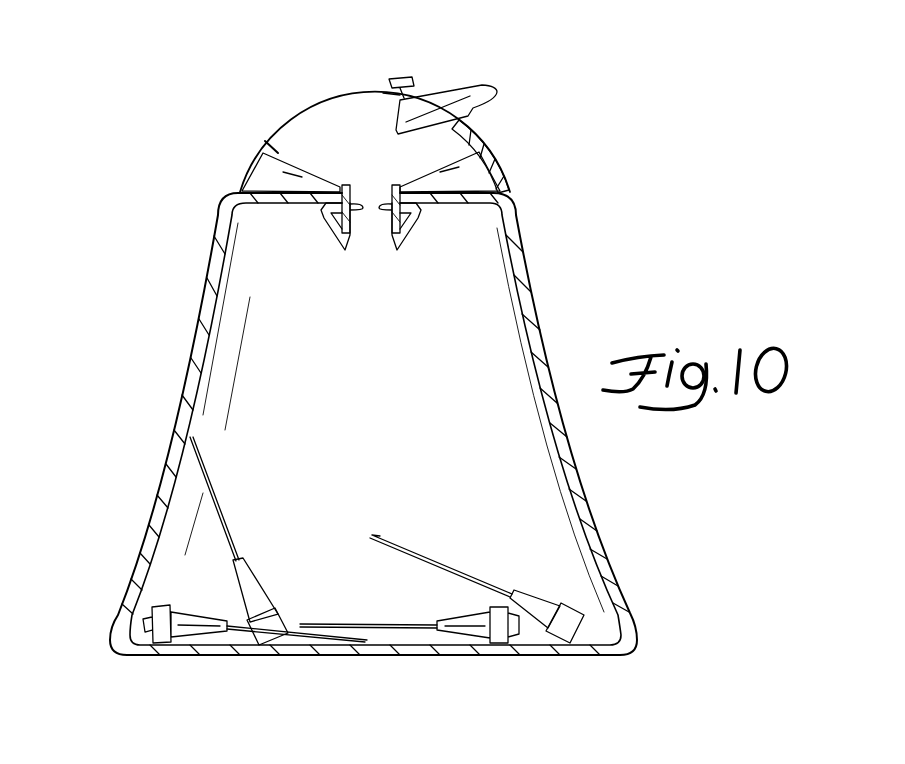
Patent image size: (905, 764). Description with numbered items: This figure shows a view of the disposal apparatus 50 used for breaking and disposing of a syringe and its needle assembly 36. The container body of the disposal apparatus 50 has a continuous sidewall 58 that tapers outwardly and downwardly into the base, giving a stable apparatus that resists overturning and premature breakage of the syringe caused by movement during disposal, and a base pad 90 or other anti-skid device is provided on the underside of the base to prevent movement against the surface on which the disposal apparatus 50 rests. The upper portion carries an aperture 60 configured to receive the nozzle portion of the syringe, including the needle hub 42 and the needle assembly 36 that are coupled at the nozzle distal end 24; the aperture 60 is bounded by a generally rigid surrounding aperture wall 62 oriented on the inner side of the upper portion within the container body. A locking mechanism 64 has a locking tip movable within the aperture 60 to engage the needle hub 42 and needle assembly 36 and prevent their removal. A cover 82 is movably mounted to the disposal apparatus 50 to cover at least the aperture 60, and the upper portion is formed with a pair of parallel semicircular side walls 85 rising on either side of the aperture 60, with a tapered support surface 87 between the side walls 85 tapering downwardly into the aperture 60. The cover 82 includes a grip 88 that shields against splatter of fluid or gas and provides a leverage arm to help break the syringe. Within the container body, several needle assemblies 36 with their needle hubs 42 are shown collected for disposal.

The nozzle distal end 24 is at (162, 603).
The needle assembly 36 is at (316, 594).
The needle hub 42 is at (150, 622).
The disposal apparatus 50 is at (593, 278).
The sidewall 58 is at (598, 532).
The aperture 60 is at (372, 190).
The aperture wall 62 is at (458, 385).
The locking mechanism 64 is at (331, 250).
The cover 82 is at (503, 148).
The side wall 85 is at (316, 119).
The tapered support surface 87 is at (278, 152).
The grip 88 is at (485, 85).
The base pad 90 is at (356, 658).